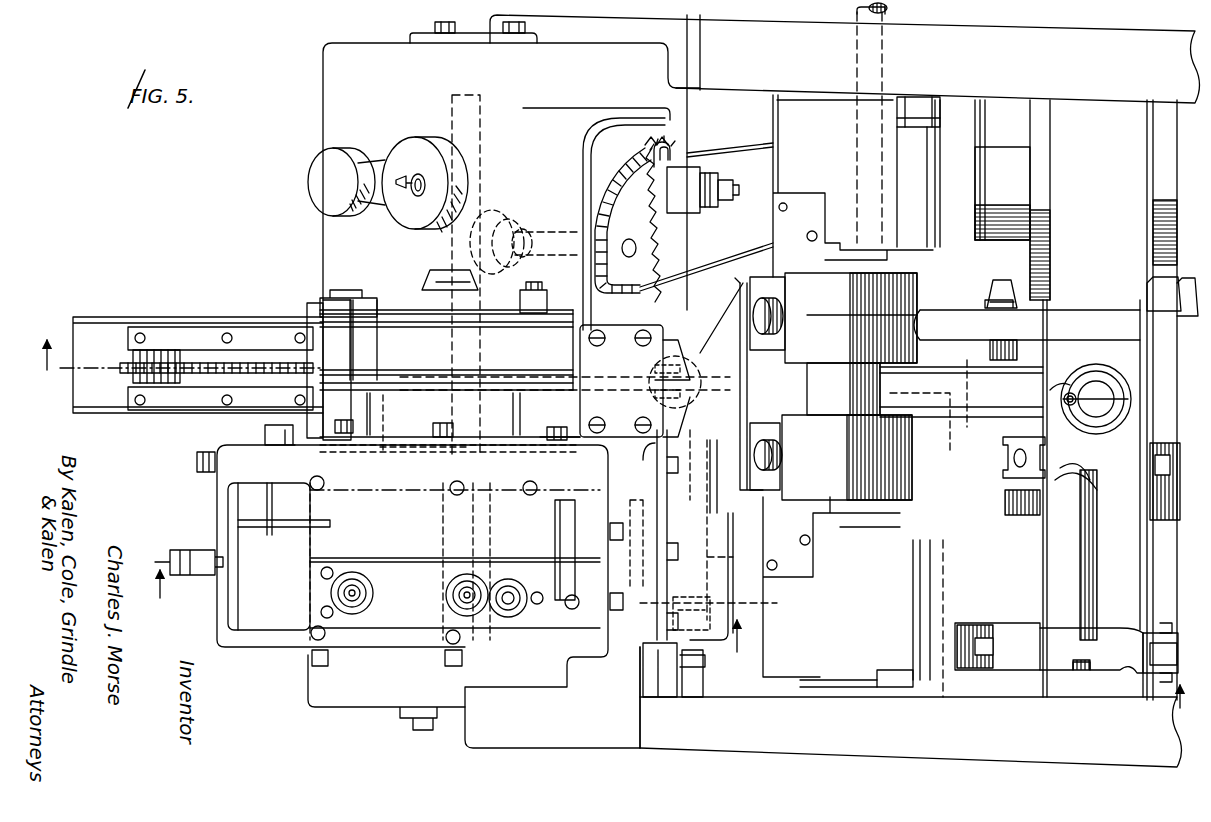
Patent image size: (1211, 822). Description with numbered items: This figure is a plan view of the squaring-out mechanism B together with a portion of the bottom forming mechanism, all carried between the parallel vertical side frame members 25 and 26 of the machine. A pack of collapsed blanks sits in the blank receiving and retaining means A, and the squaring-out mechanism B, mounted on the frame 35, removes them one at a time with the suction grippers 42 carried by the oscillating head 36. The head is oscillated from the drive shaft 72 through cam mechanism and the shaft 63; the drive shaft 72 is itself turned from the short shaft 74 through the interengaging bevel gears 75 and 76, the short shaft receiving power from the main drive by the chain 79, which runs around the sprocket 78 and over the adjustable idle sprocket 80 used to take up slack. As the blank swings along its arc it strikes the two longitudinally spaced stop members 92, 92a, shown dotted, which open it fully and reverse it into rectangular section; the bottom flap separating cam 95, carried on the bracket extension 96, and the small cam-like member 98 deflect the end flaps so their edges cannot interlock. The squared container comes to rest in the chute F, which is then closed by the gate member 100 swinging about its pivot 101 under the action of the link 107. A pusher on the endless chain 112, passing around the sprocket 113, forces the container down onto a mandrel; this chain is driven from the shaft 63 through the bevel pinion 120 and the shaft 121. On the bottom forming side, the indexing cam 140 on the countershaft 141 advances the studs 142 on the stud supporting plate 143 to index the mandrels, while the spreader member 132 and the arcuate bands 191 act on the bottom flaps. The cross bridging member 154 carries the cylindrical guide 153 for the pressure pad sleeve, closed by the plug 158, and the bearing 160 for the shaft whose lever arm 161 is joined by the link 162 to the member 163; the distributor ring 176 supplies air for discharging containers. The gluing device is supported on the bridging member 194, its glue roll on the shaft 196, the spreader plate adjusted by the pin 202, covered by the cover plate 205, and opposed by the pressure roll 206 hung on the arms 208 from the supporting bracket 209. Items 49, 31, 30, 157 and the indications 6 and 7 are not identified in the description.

The side frame member 25 is at (1043, 40).
The side frame member 26 is at (948, 745).
The frame 35 is at (323, 118).
The hand knob 49 is at (382, 160).
The bevel gear 75 is at (505, 210).
The short shaft 74 is at (555, 240).
The bevel gear 76 is at (432, 282).
The link 107 is at (553, 281).
The sprocket 78 is at (632, 220).
The chain 79 is at (743, 160).
The idle sprocket 80 is at (688, 157).
The drive shaft 72 is at (457, 356).
The chute F is at (420, 397).
The gate member 100 is at (378, 312).
The pivot 101 is at (424, 307).
The squaring-out mechanism B is at (282, 305).
The endless chain 112 is at (200, 358).
The sprocket 113 is at (128, 372).
The section line 6 is at (613, 529).
The bottom flap separating cam 95 is at (265, 433).
The bracket extension 96 is at (197, 462).
The blank receiving and retaining means A is at (216, 493).
The oscillating head 36 is at (397, 580).
The suction grippers 42 is at (355, 578).
The screw 31 is at (322, 483).
The stop member 92a is at (425, 464).
The stop member 92 is at (538, 488).
The cam-like member 98 is at (570, 500).
The shaft 63 is at (648, 460).
The base 30 is at (327, 696).
The section line 7 is at (449, 601).
The spreader member 132 is at (716, 483).
The bridging member 194 is at (800, 207).
The shaft 196 is at (885, 9).
The pin 202 is at (770, 300).
The cover plate 205 is at (905, 283).
The pressure roll 206 is at (905, 300).
The arcuate bands 191 is at (990, 405).
The arms 208 is at (948, 100).
The supporting bracket 209 is at (940, 140).
The countershaft 141 is at (978, 175).
The indexing cam 140 is at (1048, 240).
The cross bridging member 154 is at (1093, 118).
The stud supporting plate 143 is at (1040, 330).
The studs 142 is at (1015, 298).
The bearing 160 is at (1043, 555).
The dial 157 is at (1090, 385).
The plug 158 is at (1100, 388).
The cylindrical guide 153 is at (1058, 392).
The distributor ring 176 is at (1040, 470).
The member 163 is at (1018, 672).
The link 162 is at (1150, 655).
The lever arm 161 is at (1115, 637).
The bevel pinion 120 is at (760, 605).
The shaft 121 is at (735, 540).